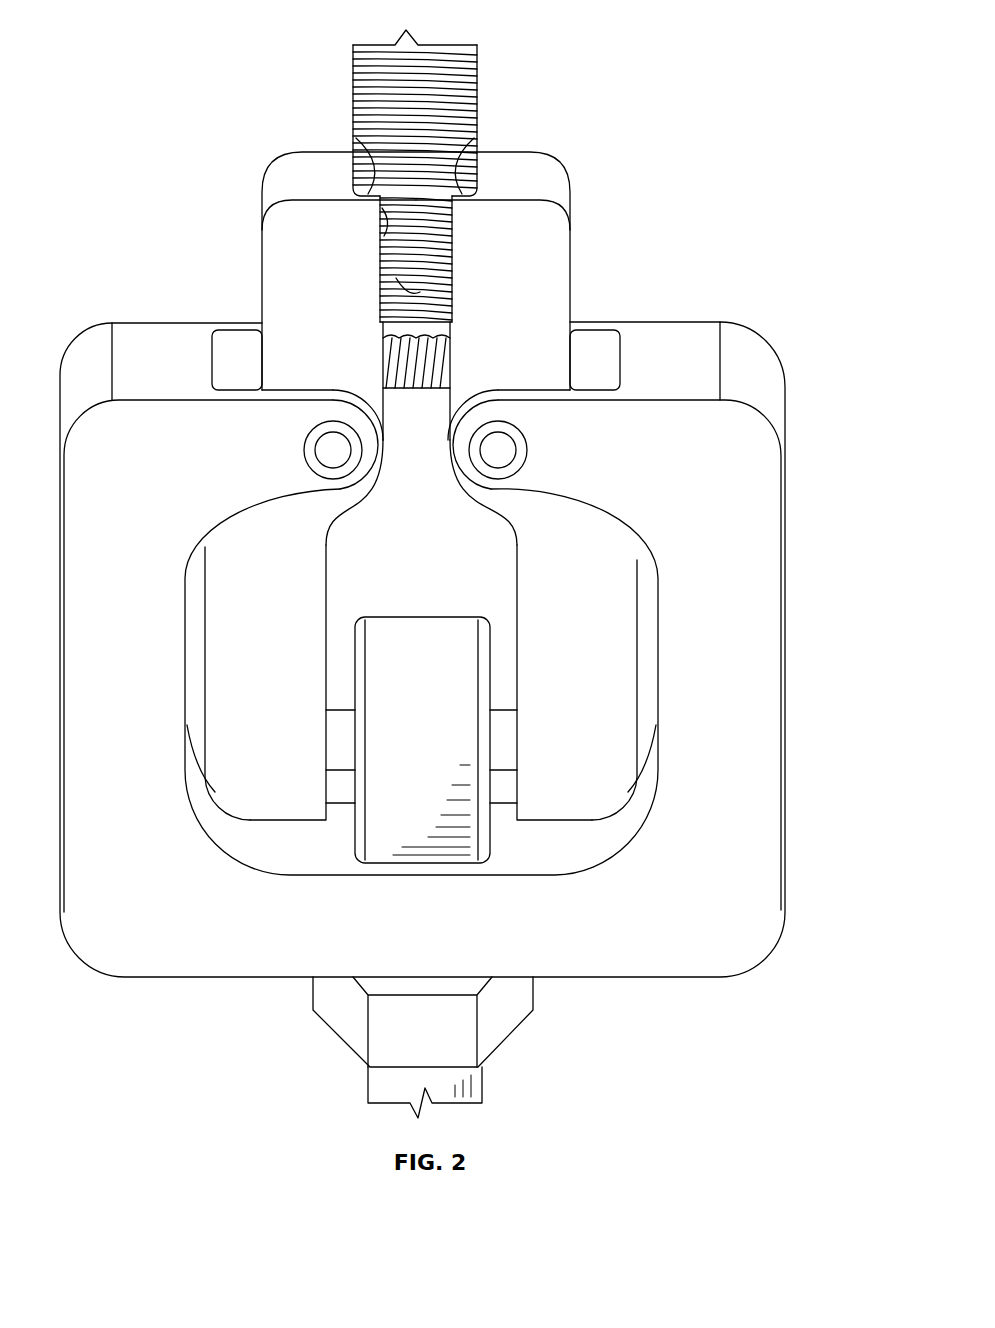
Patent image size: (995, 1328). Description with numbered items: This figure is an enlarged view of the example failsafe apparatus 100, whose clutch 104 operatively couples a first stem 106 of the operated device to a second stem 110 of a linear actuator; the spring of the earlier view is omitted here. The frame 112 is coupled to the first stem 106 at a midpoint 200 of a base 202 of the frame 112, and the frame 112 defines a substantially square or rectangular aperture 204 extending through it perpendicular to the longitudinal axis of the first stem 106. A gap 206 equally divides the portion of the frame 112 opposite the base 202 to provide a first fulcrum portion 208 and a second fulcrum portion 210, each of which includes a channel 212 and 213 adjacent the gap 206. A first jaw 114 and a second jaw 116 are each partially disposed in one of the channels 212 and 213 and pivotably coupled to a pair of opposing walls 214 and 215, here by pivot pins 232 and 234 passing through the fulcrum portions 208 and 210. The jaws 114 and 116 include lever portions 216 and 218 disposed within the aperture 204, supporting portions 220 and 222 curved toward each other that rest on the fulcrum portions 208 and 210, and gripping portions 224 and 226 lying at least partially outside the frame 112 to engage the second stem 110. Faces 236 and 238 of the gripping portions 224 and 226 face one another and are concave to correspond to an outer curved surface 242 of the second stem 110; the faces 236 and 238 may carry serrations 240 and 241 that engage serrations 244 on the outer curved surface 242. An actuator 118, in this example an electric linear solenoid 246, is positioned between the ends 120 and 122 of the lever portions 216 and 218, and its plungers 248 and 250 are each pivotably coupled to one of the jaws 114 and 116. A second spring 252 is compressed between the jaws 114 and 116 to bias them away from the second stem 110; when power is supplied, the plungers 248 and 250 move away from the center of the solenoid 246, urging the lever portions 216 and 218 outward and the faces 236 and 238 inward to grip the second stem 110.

The failsafe apparatus 100 is at (814, 318).
The clutch 104 is at (800, 714).
The first stem 106 is at (447, 1090).
The second stem 110 is at (420, 171).
The frame 112 is at (165, 935).
The first jaw 114 is at (575, 165).
The second jaw 116 is at (270, 162).
The actuator 118 is at (422, 805).
The end of lever portion 120 is at (560, 815).
The end of lever portion 122 is at (257, 815).
The midpoint 200 is at (420, 977).
The base 202 is at (420, 922).
The aperture 204 is at (432, 580).
The gap 206 is at (413, 450).
The first fulcrum portion 208 is at (612, 432).
The second fulcrum portion 210 is at (220, 440).
The channel 212 is at (598, 352).
The channel 213 is at (222, 352).
The opposing wall 214 is at (596, 390).
The opposing wall 215 is at (178, 390).
The lever portion 216 is at (588, 692).
The lever portion 218 is at (248, 702).
The supporting portion 220 is at (522, 505).
The supporting portion 222 is at (307, 537).
The gripping portion 224 is at (555, 312).
The gripping portion 226 is at (295, 300).
The pivot pin 232 is at (498, 447).
The pivot pin 234 is at (333, 447).
The face 236 is at (477, 152).
The face 238 is at (367, 152).
The serrations 240 is at (455, 272).
The serrations 241 is at (383, 222).
The outer curved surface 242 is at (405, 292).
The serrations 244 is at (478, 112).
The electric linear solenoid 246 is at (422, 740).
The plunger 248 is at (500, 715).
The plunger 250 is at (340, 715).
The second spring 252 is at (440, 352).